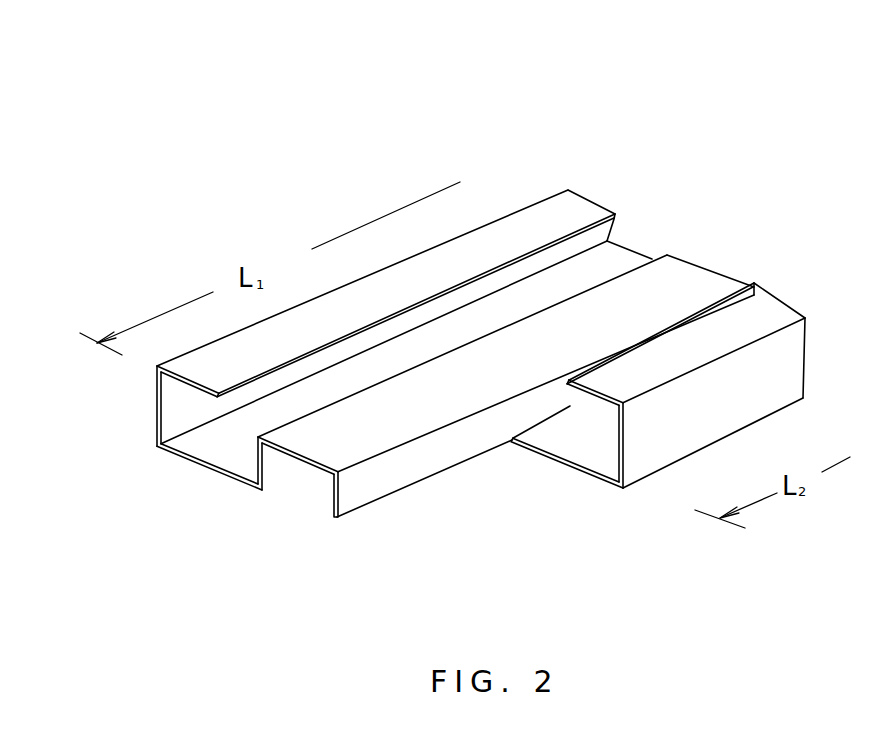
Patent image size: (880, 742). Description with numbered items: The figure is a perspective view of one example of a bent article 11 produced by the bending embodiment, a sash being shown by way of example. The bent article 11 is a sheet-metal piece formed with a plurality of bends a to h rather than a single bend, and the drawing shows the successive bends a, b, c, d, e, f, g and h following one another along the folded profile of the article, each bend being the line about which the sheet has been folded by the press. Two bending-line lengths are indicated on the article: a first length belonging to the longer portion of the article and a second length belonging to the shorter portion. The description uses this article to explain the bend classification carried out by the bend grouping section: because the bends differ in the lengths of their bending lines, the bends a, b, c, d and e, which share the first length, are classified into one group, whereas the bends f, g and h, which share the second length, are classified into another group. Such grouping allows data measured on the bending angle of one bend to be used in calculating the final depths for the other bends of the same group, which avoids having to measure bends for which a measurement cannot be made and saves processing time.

The bent article 11 is at (675, 160).
The bend a is at (223, 339).
The bend b is at (203, 420).
The bend c is at (290, 477).
The bend d is at (375, 386).
The bend e is at (424, 435).
The bend f is at (573, 407).
The bend g is at (703, 447).
The bend h is at (777, 331).